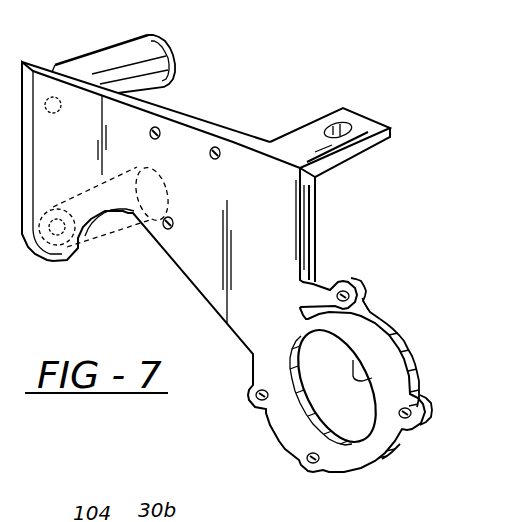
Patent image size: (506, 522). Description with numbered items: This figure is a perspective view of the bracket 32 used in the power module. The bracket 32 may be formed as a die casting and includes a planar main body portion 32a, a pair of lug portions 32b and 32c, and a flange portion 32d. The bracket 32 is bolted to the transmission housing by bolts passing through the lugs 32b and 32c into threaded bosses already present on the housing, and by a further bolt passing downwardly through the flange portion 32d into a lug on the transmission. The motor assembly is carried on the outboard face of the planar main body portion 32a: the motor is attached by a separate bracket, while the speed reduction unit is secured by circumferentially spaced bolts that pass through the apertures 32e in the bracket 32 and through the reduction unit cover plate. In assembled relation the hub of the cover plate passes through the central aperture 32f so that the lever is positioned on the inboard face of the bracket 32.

The bracket 32 is at (220, 108).
The planar main body portion 32a is at (275, 226).
The lug portion 32b is at (113, 60).
The lug portion 32c is at (112, 225).
The flange portion 32d is at (361, 115).
The apertures 32e is at (353, 281).
The aperture 32f is at (353, 360).